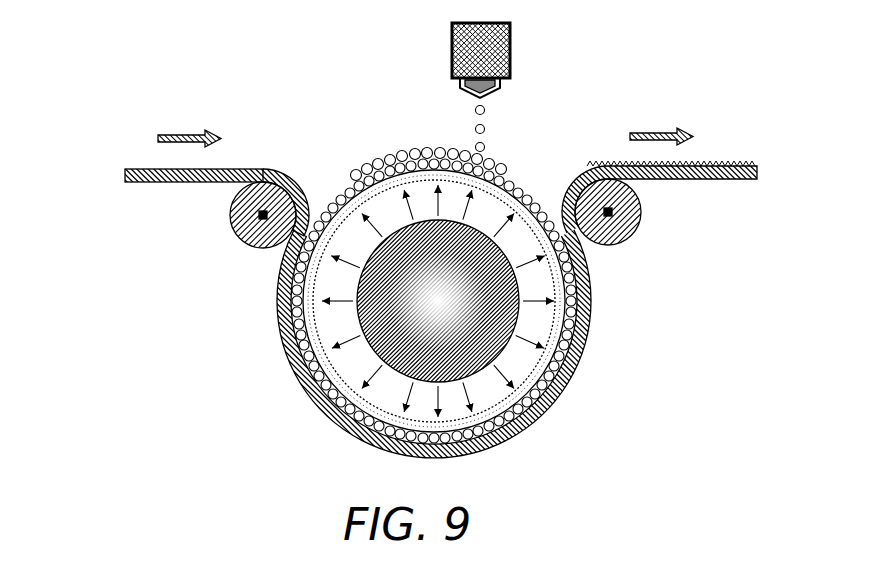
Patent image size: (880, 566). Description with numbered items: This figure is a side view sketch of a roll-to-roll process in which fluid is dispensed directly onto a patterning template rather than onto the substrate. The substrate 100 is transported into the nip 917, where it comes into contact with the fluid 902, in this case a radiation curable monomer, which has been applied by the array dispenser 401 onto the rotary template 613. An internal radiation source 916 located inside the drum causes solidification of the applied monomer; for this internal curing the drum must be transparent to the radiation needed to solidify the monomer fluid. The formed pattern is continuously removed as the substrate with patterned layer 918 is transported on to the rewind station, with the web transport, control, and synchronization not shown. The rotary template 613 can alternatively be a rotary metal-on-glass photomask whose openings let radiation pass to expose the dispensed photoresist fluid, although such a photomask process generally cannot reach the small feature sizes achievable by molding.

The substrate 100 is at (148, 160).
The nip 917 is at (308, 183).
The fluid 902 is at (385, 148).
The array dispenser 401 is at (523, 44).
The rotary template 613 is at (528, 177).
The substrate with patterned layer 918 is at (713, 152).
The internal radiation source 916 is at (528, 317).